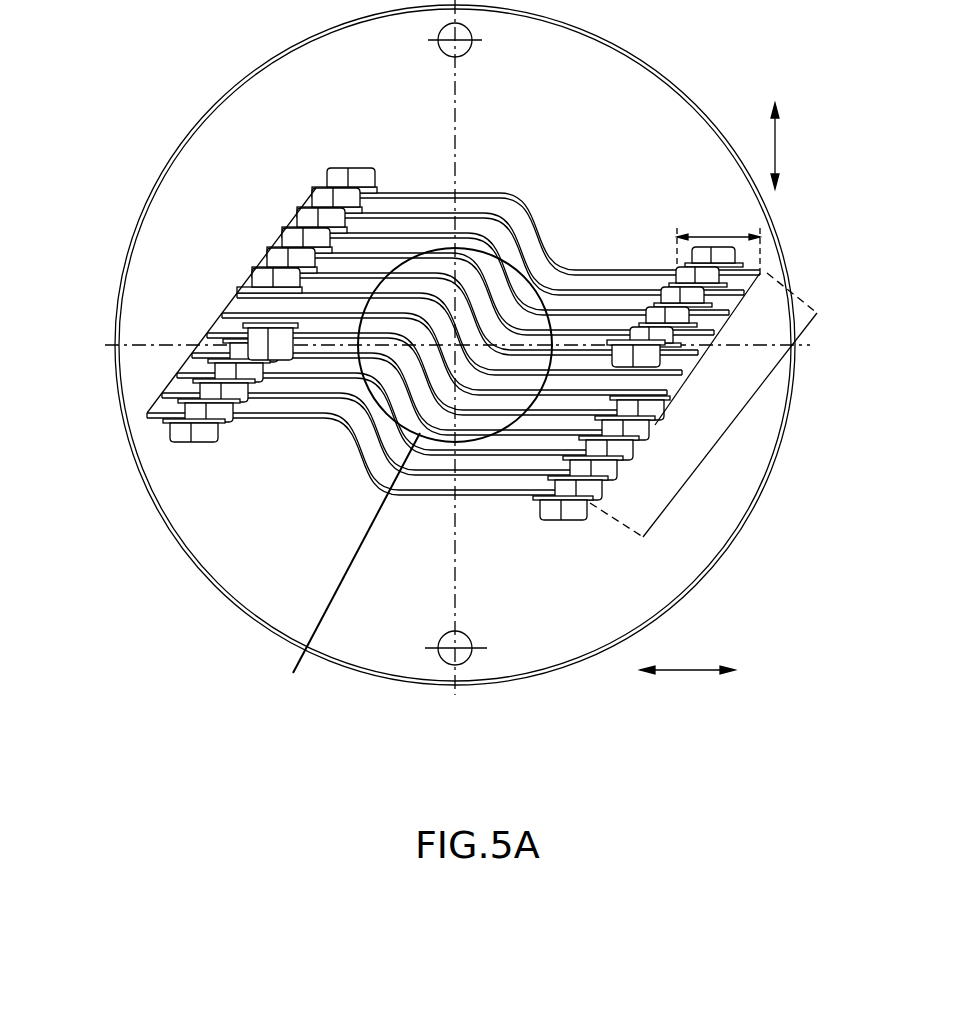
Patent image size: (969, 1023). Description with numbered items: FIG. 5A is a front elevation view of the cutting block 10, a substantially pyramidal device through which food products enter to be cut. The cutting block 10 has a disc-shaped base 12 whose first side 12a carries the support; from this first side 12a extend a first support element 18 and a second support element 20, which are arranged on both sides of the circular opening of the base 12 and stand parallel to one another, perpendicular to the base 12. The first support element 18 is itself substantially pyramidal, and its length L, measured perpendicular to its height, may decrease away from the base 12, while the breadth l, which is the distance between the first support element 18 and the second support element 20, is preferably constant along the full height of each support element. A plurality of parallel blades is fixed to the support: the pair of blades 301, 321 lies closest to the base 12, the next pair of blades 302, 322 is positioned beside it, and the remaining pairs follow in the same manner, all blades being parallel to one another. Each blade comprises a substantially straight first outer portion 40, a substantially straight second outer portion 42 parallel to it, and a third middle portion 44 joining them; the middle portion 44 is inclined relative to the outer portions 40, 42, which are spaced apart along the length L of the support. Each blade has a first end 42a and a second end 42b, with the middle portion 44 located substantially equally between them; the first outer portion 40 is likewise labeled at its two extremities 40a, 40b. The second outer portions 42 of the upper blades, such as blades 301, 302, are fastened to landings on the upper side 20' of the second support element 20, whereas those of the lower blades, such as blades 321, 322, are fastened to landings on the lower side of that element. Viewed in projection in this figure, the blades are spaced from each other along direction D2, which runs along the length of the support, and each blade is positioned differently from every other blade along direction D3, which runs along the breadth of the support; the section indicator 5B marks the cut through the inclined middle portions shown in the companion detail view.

The cutting block 10 is at (108, 207).
The base 12 is at (703, 577).
The first side of base 12a is at (562, 128).
The first support element 18 is at (663, 383).
The second support element 20 is at (416, 361).
The upper side of second support element 20' is at (498, 252).
The first blade of first pair 301 is at (362, 247).
The first blade of second pair 302 is at (392, 242).
The second blade of first pair 321 is at (260, 415).
The second blade of second pair 322 is at (308, 395).
The first outer portion 40 is at (512, 493).
The first bolt end nuts 40a is at (687, 373).
The first bolt opposite end nuts 40b is at (222, 315).
The second outer portion 42 is at (343, 293).
The first end of blade 42a is at (683, 370).
The second end of blade 42b is at (247, 290).
The third middle portion 44 is at (465, 330).
The length L is at (725, 450).
The breadth l is at (718, 243).
The section indicator for FIG. 5B is at (347, 570).
The direction D2 is at (779, 153).
The direction D3 is at (682, 676).